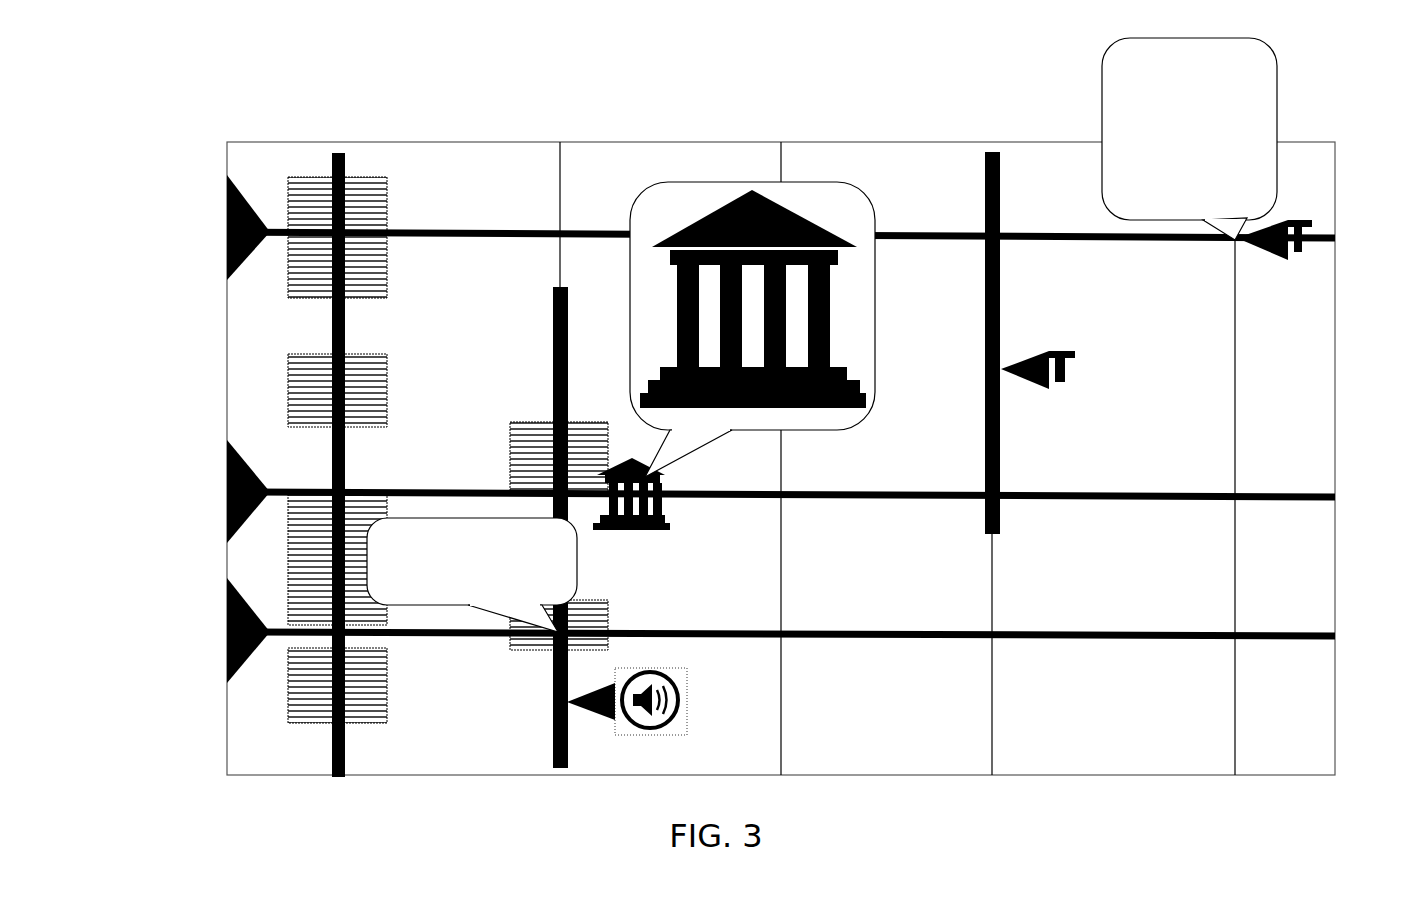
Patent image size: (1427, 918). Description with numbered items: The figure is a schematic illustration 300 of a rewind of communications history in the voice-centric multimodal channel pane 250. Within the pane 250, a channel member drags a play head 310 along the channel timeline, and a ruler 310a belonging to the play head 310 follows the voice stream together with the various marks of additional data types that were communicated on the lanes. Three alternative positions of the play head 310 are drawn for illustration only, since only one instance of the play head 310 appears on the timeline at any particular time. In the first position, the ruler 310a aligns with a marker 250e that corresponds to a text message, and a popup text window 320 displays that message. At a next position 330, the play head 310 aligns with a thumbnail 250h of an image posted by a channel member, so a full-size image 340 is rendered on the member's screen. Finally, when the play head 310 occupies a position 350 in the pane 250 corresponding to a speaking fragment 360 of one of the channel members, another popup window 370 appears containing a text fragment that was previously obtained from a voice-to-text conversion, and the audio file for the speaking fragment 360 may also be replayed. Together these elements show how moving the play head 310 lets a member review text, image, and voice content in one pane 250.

The schematic illustration 300 is at (1398, 80).
The voice-centric multimodal channel pane 250 is at (781, 459).
The play head 310 is at (225, 231).
The ruler 310a is at (477, 231).
The next position 330 is at (227, 492).
The position 350 is at (227, 631).
The full-size image 340 is at (660, 188).
The popup text window 320 is at (1102, 128).
The marker 250e is at (1293, 218).
The thumbnail 250h is at (662, 505).
The popup window 370 is at (470, 605).
The speaking fragment 360 is at (537, 650).